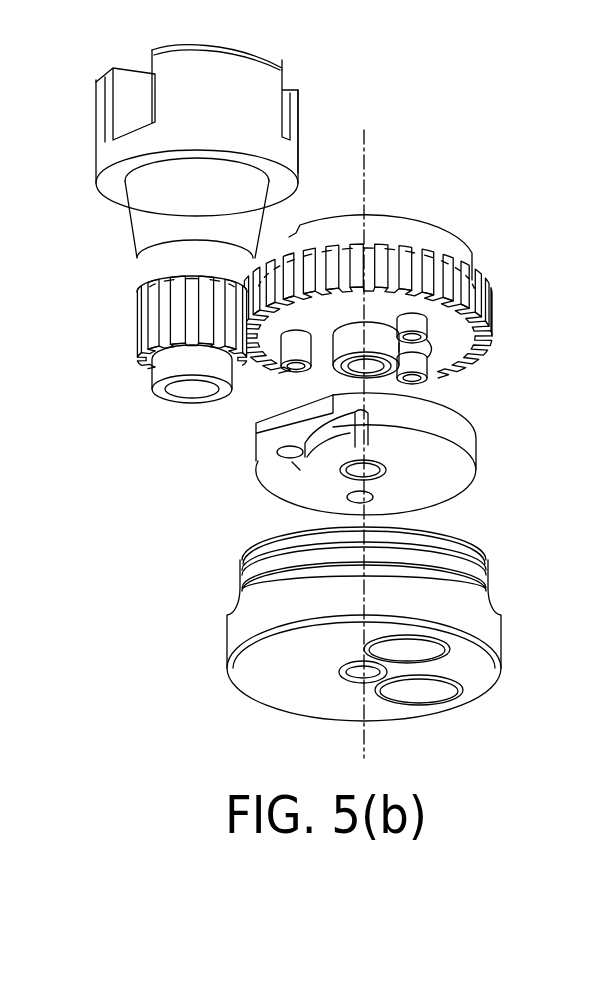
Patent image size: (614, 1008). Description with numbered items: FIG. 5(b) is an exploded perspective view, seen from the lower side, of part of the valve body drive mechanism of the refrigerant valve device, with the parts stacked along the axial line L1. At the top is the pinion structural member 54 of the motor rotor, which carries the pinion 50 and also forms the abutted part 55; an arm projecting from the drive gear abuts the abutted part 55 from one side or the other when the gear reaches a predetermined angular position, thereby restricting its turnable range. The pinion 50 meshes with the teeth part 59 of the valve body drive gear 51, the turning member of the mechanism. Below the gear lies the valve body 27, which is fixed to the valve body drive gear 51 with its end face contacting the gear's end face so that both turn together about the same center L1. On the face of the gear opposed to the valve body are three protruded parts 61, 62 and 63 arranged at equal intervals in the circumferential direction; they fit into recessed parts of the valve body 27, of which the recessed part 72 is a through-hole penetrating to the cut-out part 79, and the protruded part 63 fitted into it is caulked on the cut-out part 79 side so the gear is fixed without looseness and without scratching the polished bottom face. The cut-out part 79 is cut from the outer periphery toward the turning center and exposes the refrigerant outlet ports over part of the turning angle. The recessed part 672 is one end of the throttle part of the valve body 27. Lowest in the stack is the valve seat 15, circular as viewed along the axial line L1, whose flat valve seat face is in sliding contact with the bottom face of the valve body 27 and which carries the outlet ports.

The pinion structural member 54 is at (93, 137).
The abutted part 55 is at (157, 263).
The pinion 50 is at (180, 321).
The valve body drive gear 51 is at (478, 246).
The teeth part 59 is at (482, 303).
The protruded part 61 is at (428, 356).
The protruded part 62 is at (416, 382).
The protruded part 63 is at (296, 368).
The valve body 27 is at (480, 447).
The recessed part 72 is at (294, 459).
The cut-out part 79 is at (295, 468).
The recessed part 672 is at (380, 498).
The valve seat 15 is at (228, 636).
The axial line L1 is at (366, 150).